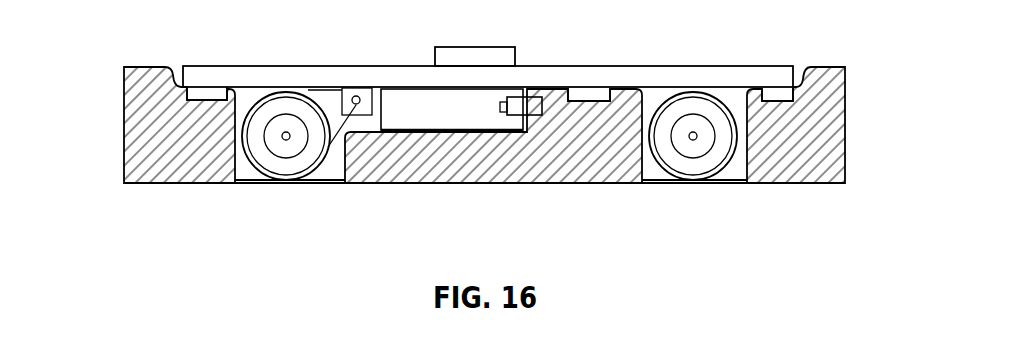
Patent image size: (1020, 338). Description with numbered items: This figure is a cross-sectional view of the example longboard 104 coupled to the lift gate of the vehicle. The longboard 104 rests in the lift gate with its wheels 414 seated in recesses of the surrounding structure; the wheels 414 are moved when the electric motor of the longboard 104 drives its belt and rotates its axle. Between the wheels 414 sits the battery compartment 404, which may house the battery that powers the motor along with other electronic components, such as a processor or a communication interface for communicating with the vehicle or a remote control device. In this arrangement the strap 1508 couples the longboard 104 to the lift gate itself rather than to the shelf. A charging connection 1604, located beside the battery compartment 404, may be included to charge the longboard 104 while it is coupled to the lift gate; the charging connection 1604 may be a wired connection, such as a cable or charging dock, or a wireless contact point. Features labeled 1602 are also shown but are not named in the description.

The longboard 104 is at (727, 80).
The strap 1508 is at (478, 45).
The wheels 414 is at (297, 160).
The battery compartment 404 is at (456, 120).
The charging connection 1604 is at (515, 108).
The pocket 1602 is at (208, 93).